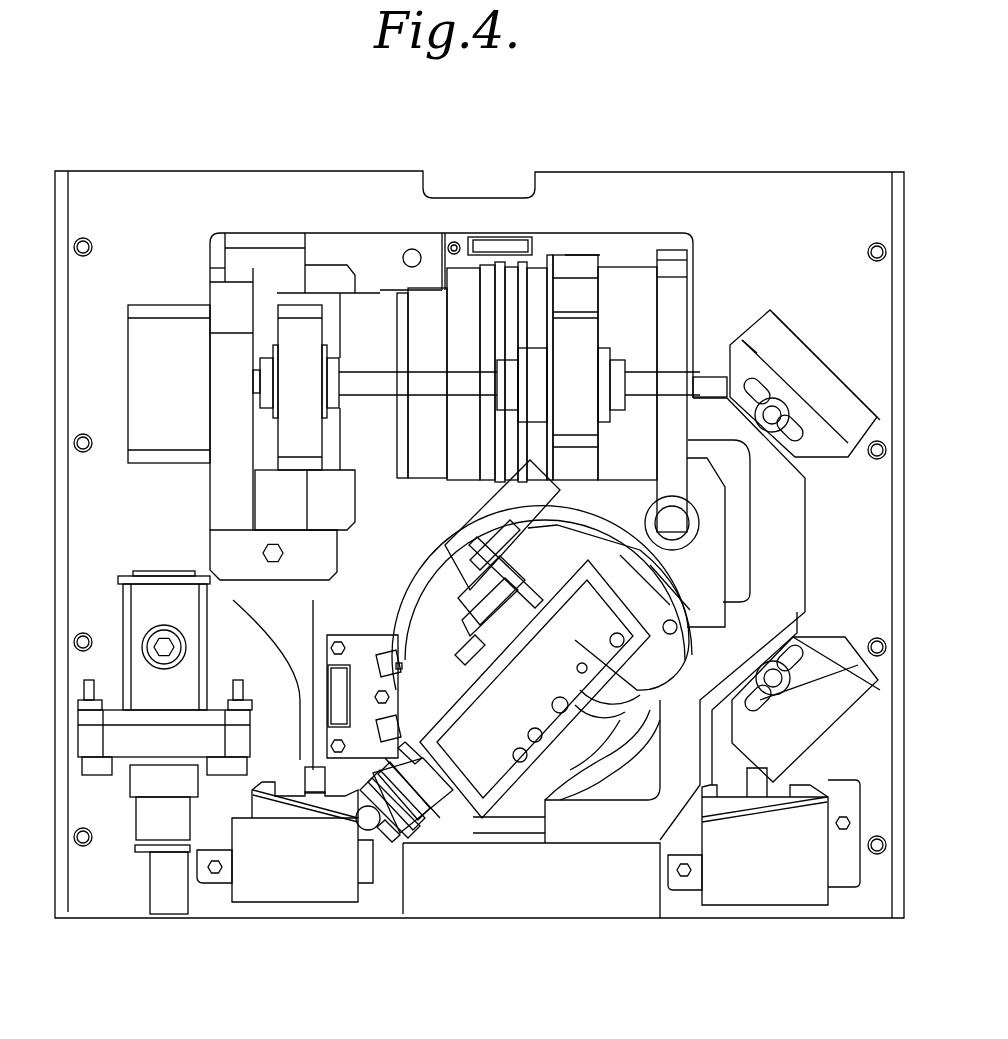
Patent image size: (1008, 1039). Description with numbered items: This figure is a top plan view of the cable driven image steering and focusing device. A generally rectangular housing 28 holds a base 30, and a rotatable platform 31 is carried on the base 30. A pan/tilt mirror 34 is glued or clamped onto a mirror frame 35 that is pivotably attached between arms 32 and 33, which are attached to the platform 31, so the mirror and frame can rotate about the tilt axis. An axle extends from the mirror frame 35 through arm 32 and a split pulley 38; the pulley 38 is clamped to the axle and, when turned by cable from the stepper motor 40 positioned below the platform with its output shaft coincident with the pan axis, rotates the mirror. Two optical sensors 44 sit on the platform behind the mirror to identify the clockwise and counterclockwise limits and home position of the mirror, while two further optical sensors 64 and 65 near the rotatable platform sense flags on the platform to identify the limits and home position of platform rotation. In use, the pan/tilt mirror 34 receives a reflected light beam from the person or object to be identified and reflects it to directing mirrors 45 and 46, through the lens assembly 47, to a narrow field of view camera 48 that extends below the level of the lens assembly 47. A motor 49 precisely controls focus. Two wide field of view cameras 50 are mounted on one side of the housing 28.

The housing 28 is at (792, 198).
The base 30 is at (650, 828).
The rotatable platform 31 is at (537, 757).
The arm 32 is at (443, 808).
The arm 33 is at (650, 590).
The pan/tilt mirror 34 is at (552, 698).
The mirror frame 35 is at (700, 650).
The split pulley 38 is at (455, 860).
The stepper motor 40 is at (617, 643).
The optical sensors 44 is at (470, 665).
The directing mirror 45 is at (815, 720).
The directing mirror 46 is at (815, 380).
The lens assembly 47 is at (577, 290).
The narrow field of view (NFOV) camera 48 is at (378, 320).
The motor 49 is at (626, 290).
The wide field of view (WFOV) cameras 50 is at (170, 820).
The optical sensor 64 is at (353, 720).
The optical sensor 65 is at (400, 666).